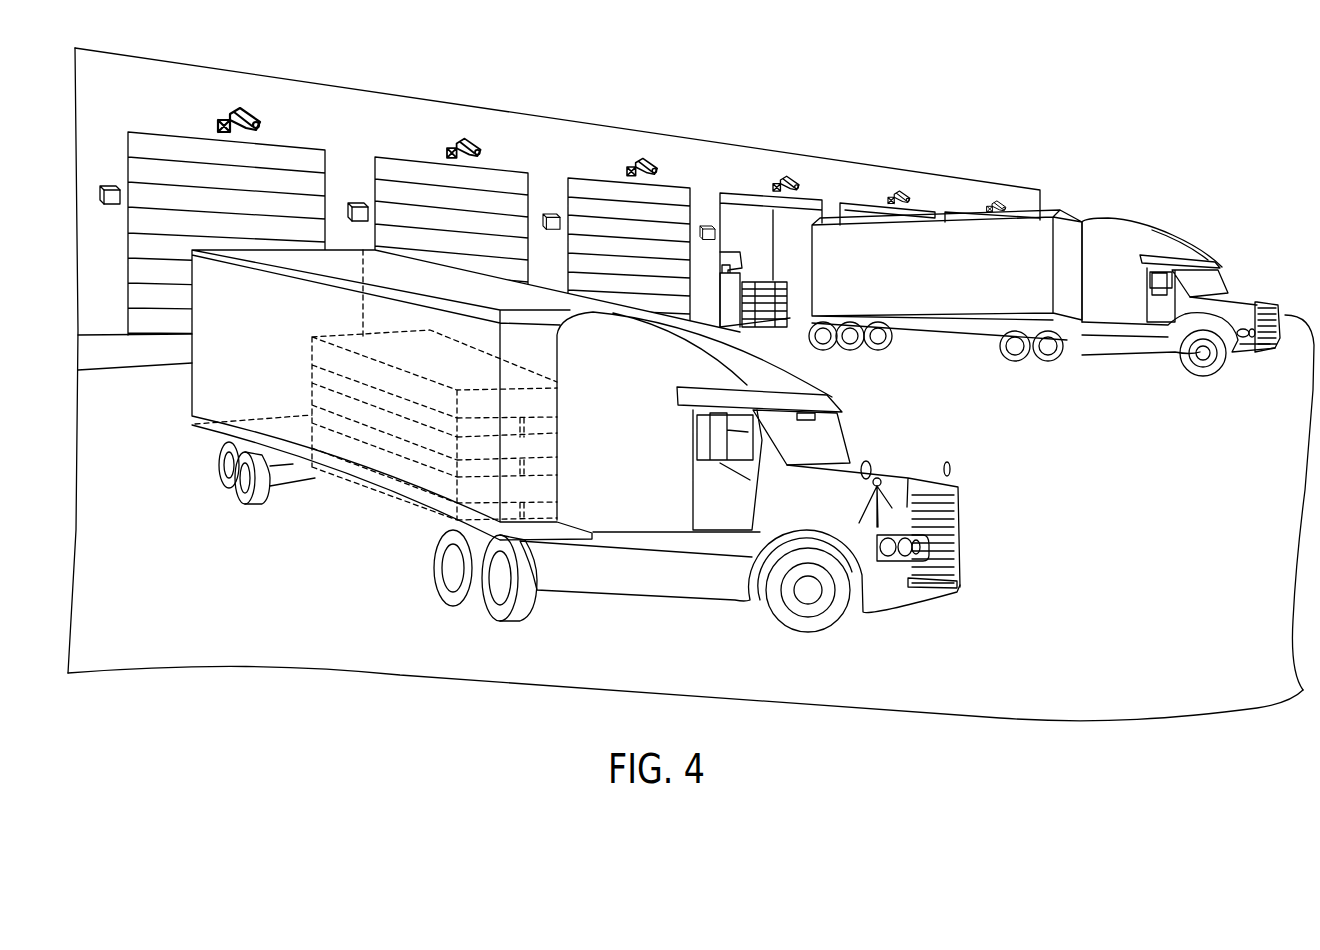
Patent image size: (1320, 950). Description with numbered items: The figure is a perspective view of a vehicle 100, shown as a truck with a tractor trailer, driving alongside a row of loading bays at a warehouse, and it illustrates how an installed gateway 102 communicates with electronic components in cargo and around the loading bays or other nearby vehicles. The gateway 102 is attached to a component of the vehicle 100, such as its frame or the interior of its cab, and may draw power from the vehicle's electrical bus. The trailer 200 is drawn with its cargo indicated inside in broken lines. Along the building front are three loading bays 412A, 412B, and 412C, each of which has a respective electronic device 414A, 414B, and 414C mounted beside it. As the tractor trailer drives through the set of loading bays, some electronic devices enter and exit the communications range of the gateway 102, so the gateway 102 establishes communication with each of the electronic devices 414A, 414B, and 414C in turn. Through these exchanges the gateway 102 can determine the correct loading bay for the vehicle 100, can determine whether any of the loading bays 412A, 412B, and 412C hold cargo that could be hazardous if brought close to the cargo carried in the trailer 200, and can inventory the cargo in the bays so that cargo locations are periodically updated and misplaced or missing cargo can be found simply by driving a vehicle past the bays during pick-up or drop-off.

The vehicle 100 is at (697, 472).
The gateway 102 is at (808, 427).
The trailer 200 is at (190, 403).
The loading bay 412A is at (283, 157).
The loading bay 412B is at (502, 177).
The loading bay 412C is at (677, 188).
The electronic device 414A is at (114, 194).
The electronic device 414B is at (363, 212).
The electronic device 414C is at (550, 220).